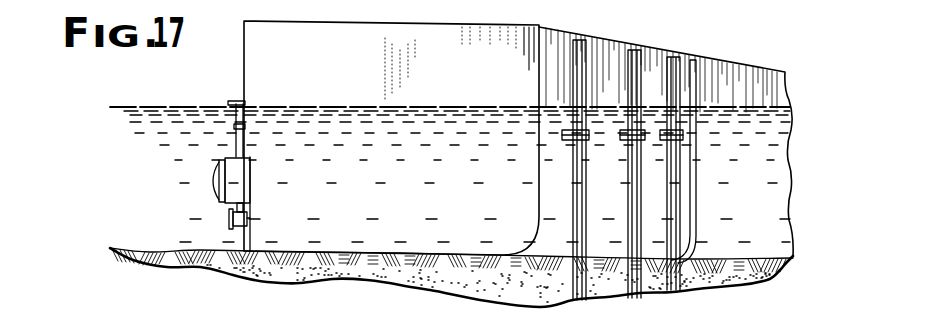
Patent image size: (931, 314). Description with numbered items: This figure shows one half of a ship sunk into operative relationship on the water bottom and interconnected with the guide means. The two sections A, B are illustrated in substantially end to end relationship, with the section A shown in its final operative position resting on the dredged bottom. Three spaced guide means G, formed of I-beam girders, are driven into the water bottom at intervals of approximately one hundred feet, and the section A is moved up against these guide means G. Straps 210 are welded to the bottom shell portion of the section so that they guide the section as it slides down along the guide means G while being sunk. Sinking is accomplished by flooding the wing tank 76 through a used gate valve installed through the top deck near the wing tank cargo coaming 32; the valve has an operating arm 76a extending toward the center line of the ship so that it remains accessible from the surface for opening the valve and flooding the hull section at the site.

The section A is at (392, 38).
The section B is at (737, 74).
The guide means G is at (672, 65).
The straps 210 is at (571, 130).
The operating arm 76a is at (243, 150).
The wing tank cargo coaming 32 is at (228, 172).
The wing tank 76 is at (228, 218).